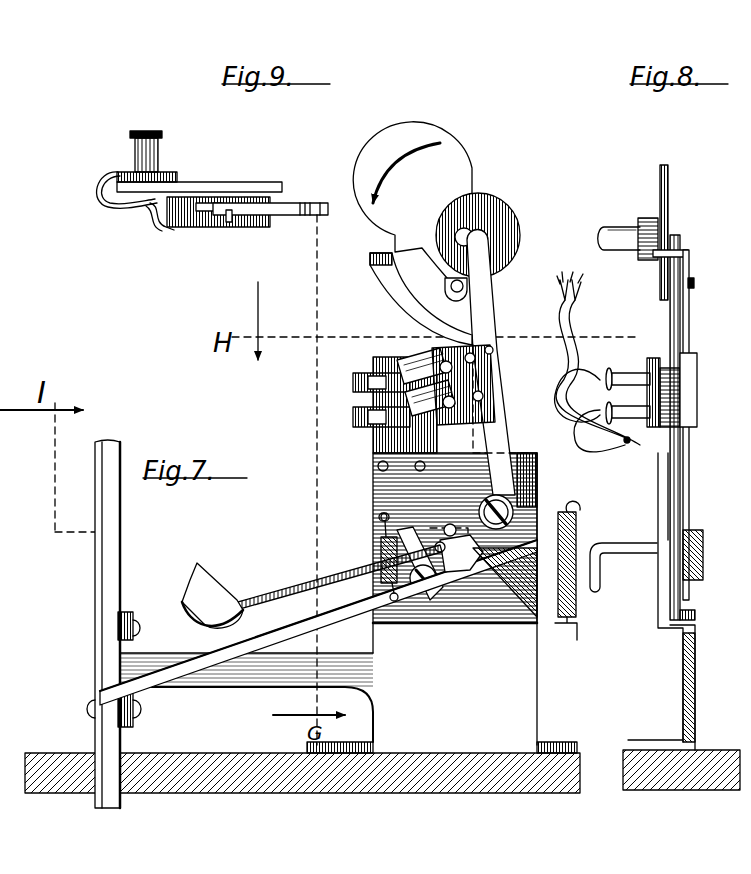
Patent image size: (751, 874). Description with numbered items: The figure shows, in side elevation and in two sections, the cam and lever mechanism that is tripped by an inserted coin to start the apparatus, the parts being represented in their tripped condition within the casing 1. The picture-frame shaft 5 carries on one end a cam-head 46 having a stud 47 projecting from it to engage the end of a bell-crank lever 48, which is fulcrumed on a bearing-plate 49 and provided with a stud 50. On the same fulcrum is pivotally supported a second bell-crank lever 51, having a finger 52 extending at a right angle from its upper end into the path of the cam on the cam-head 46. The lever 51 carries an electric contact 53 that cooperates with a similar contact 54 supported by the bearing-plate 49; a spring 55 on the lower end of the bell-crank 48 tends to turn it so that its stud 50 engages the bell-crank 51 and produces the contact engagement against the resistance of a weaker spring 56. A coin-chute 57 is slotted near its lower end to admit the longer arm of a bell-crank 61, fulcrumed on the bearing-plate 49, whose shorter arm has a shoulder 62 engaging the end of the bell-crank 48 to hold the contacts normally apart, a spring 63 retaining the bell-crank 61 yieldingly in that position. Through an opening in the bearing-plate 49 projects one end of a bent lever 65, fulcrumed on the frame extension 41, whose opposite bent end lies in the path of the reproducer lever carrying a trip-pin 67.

In FIG. 8, the casing 1 is at (710, 750).
In FIG. 7, the shaft 5 is at (466, 232).
In FIG. 8, the shaft 5 is at (617, 233).
In FIG. 7, the extension of the phonograph-frame 41 is at (200, 583).
In FIG. 7, the cam-head 46 is at (436, 200).
In FIG. 8, the cam-head 46 is at (668, 193).
In FIG. 7, the stud 47 is at (463, 283).
In FIG. 8, the stud 47 is at (694, 283).
In FIG. 9, the bell-crank lever 48 is at (240, 197).
In FIG. 7, the bell-crank lever 48 is at (489, 303).
In FIG. 8, the bell-crank lever 48 is at (680, 234).
In FIG. 9, the bearing-plate 49 is at (225, 197).
In FIG. 7, the bearing-plate 49 is at (373, 483).
In FIG. 8, the bearing-plate 49 is at (658, 493).
In FIG. 9, the stud 50 is at (230, 216).
In FIG. 7, the stud 50 is at (490, 350).
In FIG. 9, the bell-crank lever 51 is at (163, 228).
In FIG. 7, the bell-crank lever 51 is at (380, 289).
In FIG. 8, the bell-crank lever 51 is at (689, 262).
In FIG. 8, the finger 52 is at (656, 255).
In FIG. 9, the electric contact 53 is at (170, 228).
In FIG. 7, the electric contact 53 is at (413, 360).
In FIG. 8, the electric contact 53 is at (697, 372).
In FIG. 9, the electric contact 54 is at (97, 197).
In FIG. 7, the electric contact 54 is at (353, 416).
In FIG. 8, the electric contact 54 is at (680, 348).
In FIG. 7, the spring 55 is at (505, 577).
In FIG. 8, the spring 56 is at (580, 520).
In FIG. 7, the coin-chute 57 is at (107, 580).
In FIG. 7, the bell-crank 61 is at (362, 612).
In FIG. 8, the bell-crank 61 is at (695, 617).
In FIG. 7, the shoulder 62 is at (452, 523).
In FIG. 7, the spring 63 is at (373, 543).
In FIG. 8, the spring 63 is at (703, 555).
In FIG. 7, the bent lever 65 is at (293, 592).
In FIG. 8, the bent lever 65 is at (630, 548).
In FIG. 7, the trip-pin 67 is at (453, 563).